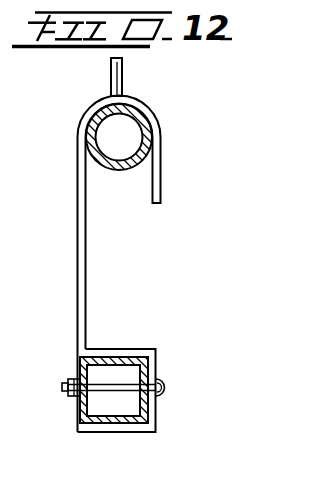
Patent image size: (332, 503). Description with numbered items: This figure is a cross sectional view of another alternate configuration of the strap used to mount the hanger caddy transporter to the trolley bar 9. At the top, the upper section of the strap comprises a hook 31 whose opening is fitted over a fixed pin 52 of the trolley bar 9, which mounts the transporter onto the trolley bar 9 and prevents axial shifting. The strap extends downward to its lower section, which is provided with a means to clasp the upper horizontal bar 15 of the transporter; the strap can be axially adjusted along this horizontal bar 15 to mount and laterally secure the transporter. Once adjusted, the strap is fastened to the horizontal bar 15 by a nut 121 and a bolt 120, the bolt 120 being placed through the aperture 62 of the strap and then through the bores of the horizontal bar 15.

The fixed pin 52 is at (118, 76).
The trolley bar 9 is at (150, 142).
The hook 31 is at (161, 181).
The horizontal bar 15 is at (113, 357).
The aperture 62 is at (156, 385).
The bolt 120 is at (160, 393).
The nut 121 is at (70, 402).